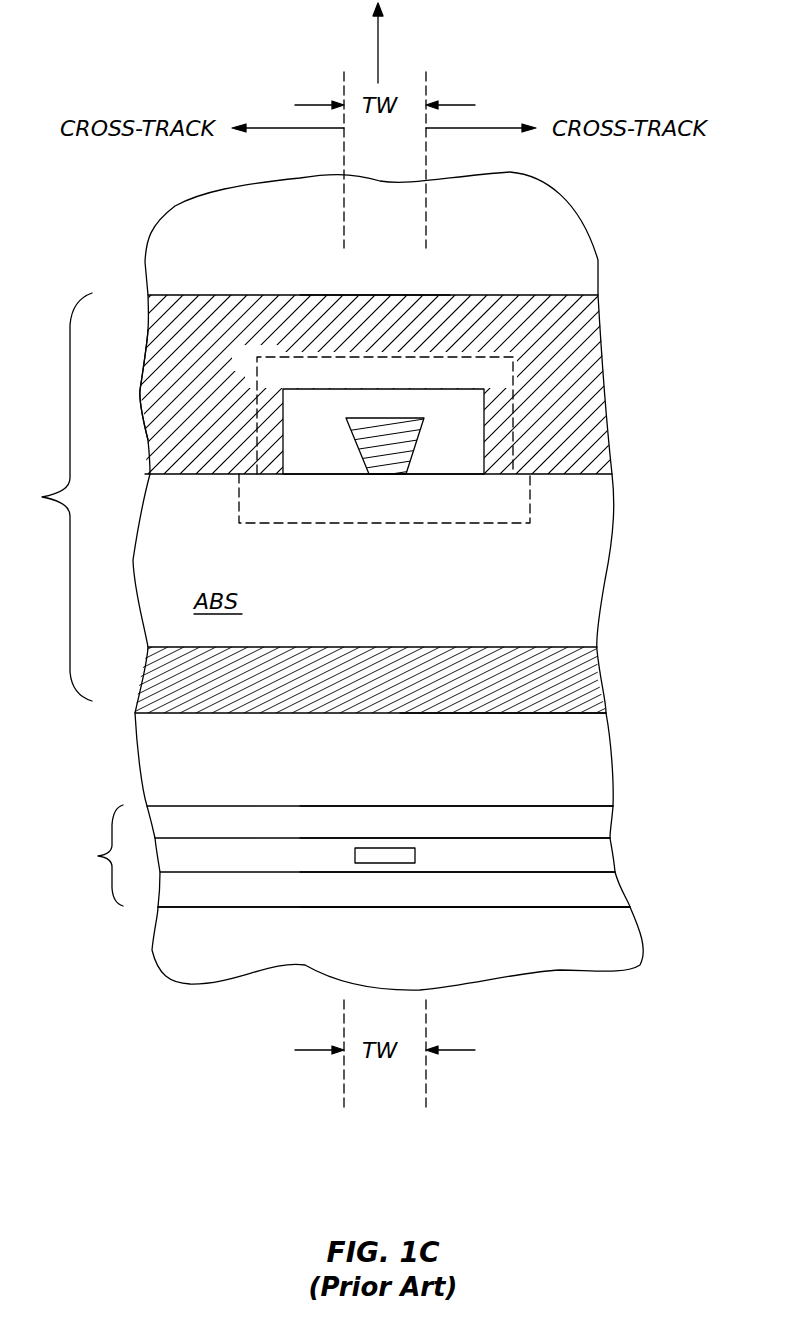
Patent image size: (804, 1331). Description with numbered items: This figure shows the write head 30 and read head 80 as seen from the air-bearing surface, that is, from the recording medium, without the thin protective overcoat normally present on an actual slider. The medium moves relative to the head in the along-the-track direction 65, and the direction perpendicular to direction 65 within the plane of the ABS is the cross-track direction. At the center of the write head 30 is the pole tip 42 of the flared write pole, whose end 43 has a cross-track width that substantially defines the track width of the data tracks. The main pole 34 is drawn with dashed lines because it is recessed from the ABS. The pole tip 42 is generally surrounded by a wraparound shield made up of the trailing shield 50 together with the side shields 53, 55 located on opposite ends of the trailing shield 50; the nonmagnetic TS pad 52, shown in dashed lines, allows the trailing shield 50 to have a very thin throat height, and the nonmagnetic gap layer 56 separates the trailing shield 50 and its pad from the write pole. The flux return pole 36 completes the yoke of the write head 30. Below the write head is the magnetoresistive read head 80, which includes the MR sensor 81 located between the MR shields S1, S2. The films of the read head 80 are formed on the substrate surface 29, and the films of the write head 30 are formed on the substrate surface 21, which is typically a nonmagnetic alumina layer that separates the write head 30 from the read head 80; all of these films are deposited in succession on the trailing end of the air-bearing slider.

The along-the-track direction 65 is at (380, 40).
The trailing shield 50 is at (472, 297).
The TS pad 52 is at (310, 360).
The nonmagnetic gap layer 56 is at (425, 395).
The side shield 55 is at (148, 380).
The side shield 53 is at (580, 372).
The pole tip 42 is at (418, 440).
The end of pole tip 43 is at (385, 472).
The write head 30 is at (50, 497).
The main pole 34 is at (485, 515).
The flux return pole 36 is at (592, 683).
The substrate surface 21 is at (580, 714).
The MR sensor 81 is at (416, 853).
The MR shield S2 is at (600, 825).
The MR shield S1 is at (620, 893).
The substrate surface 29 is at (598, 907).
The MR read head 80 is at (92, 855).